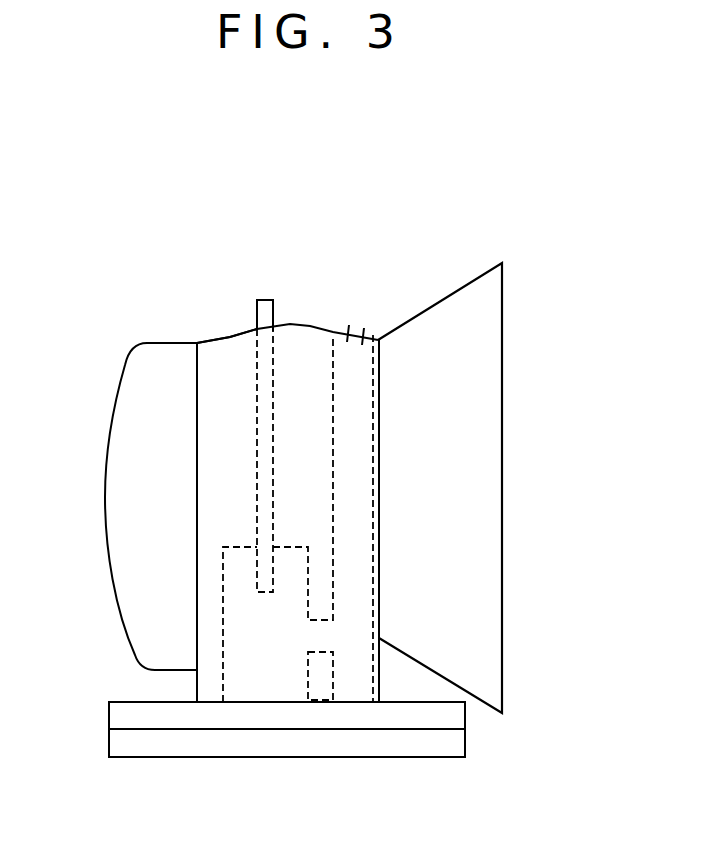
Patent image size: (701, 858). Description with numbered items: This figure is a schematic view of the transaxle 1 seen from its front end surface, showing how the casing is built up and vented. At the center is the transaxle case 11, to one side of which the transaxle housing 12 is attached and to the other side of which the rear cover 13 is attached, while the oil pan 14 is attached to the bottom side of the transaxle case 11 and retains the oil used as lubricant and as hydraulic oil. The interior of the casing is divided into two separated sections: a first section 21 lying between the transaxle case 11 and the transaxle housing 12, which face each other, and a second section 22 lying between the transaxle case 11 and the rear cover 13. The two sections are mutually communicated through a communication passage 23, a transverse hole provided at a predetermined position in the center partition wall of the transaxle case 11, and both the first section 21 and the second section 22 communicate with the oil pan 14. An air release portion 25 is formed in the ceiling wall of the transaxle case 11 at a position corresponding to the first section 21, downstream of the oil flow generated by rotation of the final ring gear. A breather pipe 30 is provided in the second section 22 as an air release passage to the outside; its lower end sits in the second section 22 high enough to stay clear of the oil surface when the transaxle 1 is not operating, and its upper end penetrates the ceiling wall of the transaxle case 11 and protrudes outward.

The transaxle 1 is at (232, 300).
The transaxle case 11 is at (221, 345).
The transaxle housing 12 is at (490, 462).
The rear cover 13 is at (120, 498).
The oil pan 14 is at (378, 742).
The first section 21 is at (353, 585).
The second section 22 is at (257, 645).
The communication passage 23 is at (320, 637).
The air release portion 25 is at (355, 328).
The breather pipe 30 is at (274, 311).